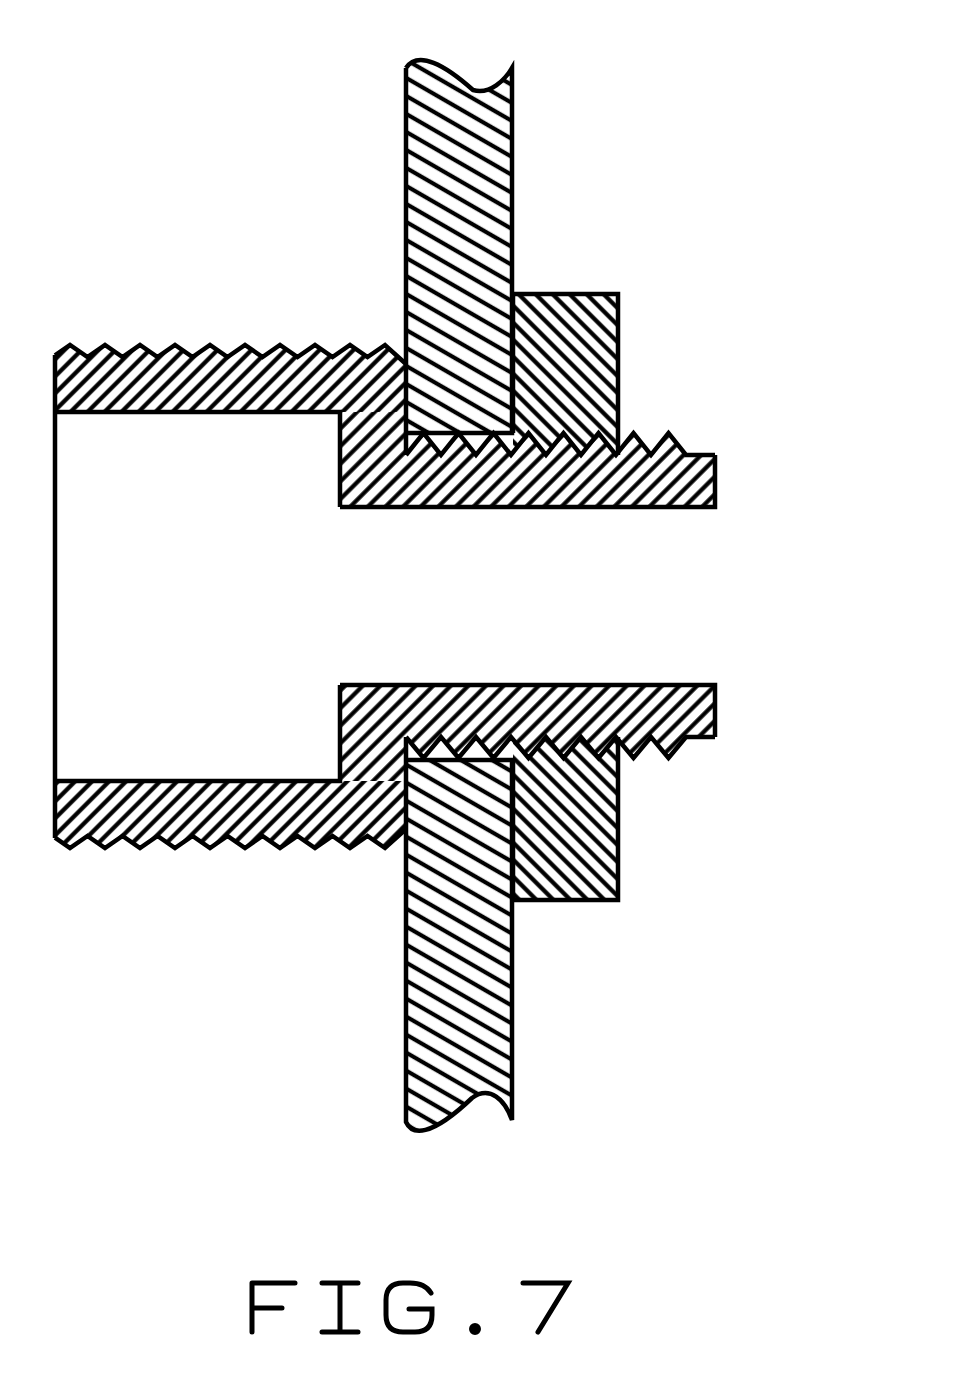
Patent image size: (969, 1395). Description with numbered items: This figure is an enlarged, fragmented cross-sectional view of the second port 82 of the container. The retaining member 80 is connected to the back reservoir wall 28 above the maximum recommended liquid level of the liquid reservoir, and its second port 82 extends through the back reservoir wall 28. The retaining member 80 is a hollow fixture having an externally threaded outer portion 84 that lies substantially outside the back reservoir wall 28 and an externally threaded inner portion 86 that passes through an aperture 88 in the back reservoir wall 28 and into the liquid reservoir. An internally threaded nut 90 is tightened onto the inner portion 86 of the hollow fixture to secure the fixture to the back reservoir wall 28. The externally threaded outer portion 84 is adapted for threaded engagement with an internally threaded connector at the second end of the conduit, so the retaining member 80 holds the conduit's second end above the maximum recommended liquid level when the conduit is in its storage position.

The back reservoir wall 28 is at (407, 198).
The retaining member 80 is at (452, 462).
The second port 82 is at (677, 597).
The externally threaded outer portion 84 is at (150, 382).
The externally threaded inner portion 86 is at (595, 513).
The aperture 88 is at (515, 432).
The internally threaded nut 90 is at (600, 345).